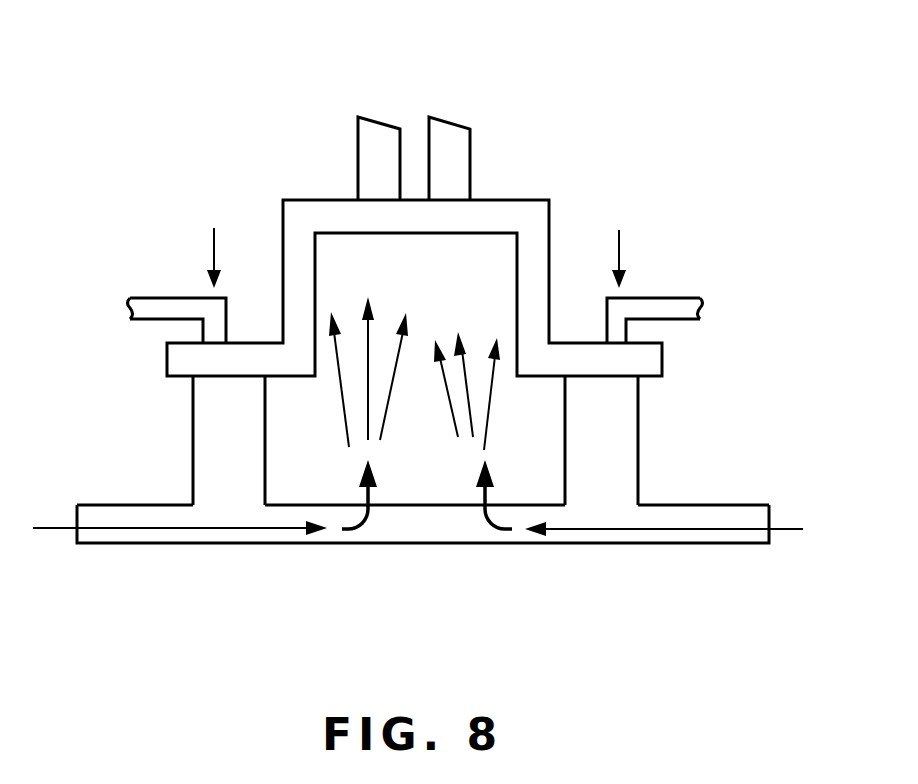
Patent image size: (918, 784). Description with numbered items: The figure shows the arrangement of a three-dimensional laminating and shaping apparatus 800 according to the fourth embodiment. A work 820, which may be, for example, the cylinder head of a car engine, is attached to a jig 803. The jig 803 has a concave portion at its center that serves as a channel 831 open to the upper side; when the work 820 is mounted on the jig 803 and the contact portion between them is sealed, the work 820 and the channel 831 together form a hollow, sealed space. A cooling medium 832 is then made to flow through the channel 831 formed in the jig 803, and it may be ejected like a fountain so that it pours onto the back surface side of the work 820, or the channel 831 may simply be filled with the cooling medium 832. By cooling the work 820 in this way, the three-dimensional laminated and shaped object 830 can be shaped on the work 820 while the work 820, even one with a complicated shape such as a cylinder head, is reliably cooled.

The three-dimensional laminating and shaping apparatus 800 is at (192, 115).
The work 820 is at (549, 213).
The three-dimensional laminated and shaped object 830 is at (382, 122).
The jig 803 is at (193, 450).
The channel 831 is at (432, 543).
The cooling medium 832 is at (52, 527).